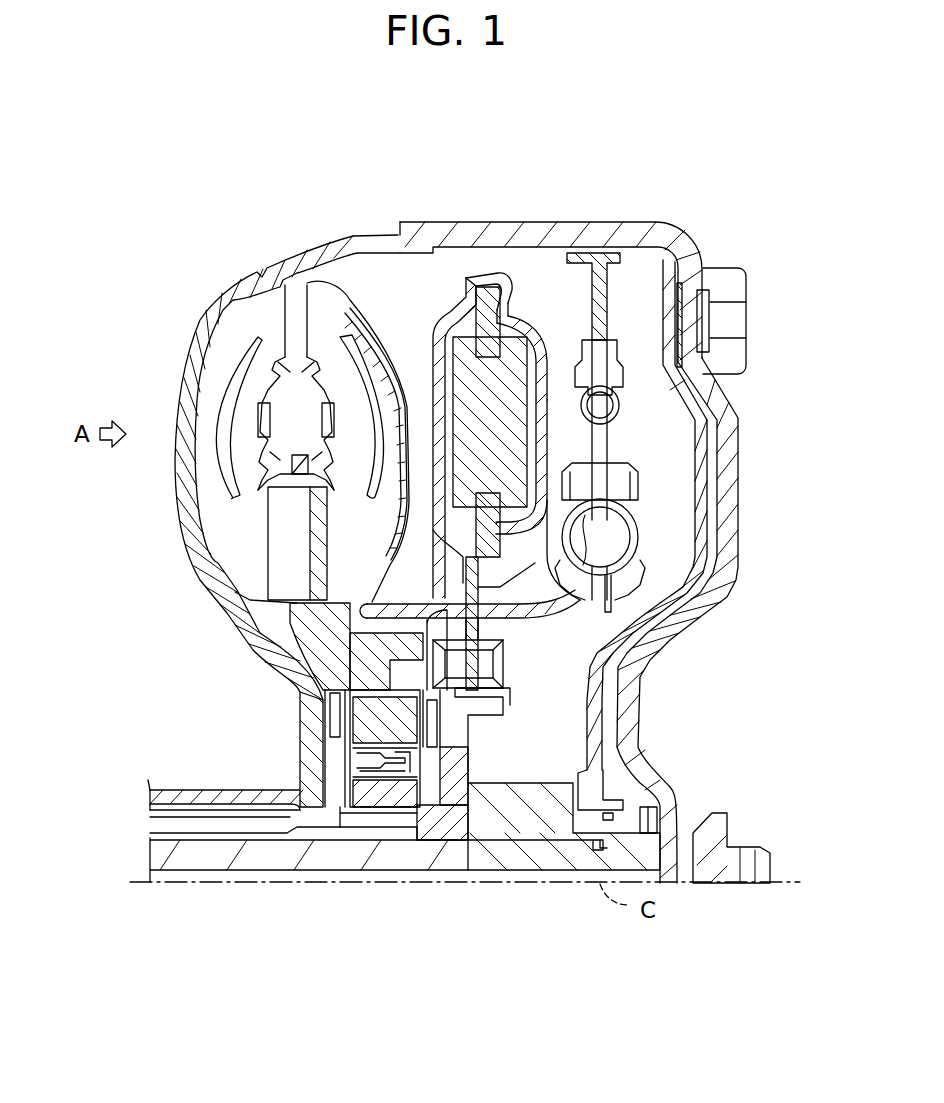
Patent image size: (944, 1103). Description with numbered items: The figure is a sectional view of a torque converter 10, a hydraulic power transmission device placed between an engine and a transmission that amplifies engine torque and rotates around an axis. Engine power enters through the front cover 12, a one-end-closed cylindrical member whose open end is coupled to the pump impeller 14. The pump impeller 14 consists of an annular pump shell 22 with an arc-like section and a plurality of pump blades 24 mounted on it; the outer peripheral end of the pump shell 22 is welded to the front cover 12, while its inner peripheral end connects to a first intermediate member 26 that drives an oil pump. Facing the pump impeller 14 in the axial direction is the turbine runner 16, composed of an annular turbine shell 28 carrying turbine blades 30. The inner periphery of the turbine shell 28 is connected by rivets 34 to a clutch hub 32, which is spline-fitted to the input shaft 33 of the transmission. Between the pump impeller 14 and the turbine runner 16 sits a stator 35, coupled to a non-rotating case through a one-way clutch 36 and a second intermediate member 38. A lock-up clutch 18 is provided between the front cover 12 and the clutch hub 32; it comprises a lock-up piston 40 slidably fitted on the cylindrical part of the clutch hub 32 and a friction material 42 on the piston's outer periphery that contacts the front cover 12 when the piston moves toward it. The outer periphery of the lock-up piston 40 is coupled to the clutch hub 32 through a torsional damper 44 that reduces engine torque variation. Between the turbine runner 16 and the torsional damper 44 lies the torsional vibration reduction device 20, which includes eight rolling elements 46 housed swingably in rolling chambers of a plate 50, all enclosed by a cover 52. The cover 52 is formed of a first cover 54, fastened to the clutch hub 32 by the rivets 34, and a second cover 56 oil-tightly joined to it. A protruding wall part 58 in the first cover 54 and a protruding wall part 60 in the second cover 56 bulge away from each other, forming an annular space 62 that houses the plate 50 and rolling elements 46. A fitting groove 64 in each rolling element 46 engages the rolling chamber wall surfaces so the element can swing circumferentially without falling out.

The torque converter 10 is at (190, 250).
The front cover 12 is at (578, 232).
The pump impeller 14 is at (168, 378).
The turbine runner 16 is at (357, 288).
The lock-up clutch 18 is at (722, 462).
The torsional vibration reduction device 20 is at (490, 298).
The pump shell 22 is at (180, 458).
The pump blades 24 is at (222, 535).
The first intermediate member 26 is at (255, 795).
The turbine shell 28 is at (385, 330).
The turbine blades 30 is at (338, 380).
The clutch hub 32 is at (520, 810).
The input shaft 33 is at (275, 845).
The rivets 34 is at (490, 655).
The stator 35 is at (262, 583).
The one-way clutch 36 is at (330, 762).
The second intermediate member 38 is at (202, 822).
The lock-up piston 40 is at (700, 540).
The friction material 42 is at (705, 325).
The torsional damper 44 is at (655, 495).
The rolling elements 46 is at (505, 405).
The plate 50 is at (500, 545).
The cover 52 is at (463, 300).
The first cover 54 is at (448, 310).
The second cover 56 is at (550, 318).
The protruding wall part 58 is at (437, 389).
The protruding wall part 60 is at (545, 470).
The space 62 is at (520, 318).
The fitting groove 64 is at (470, 530).